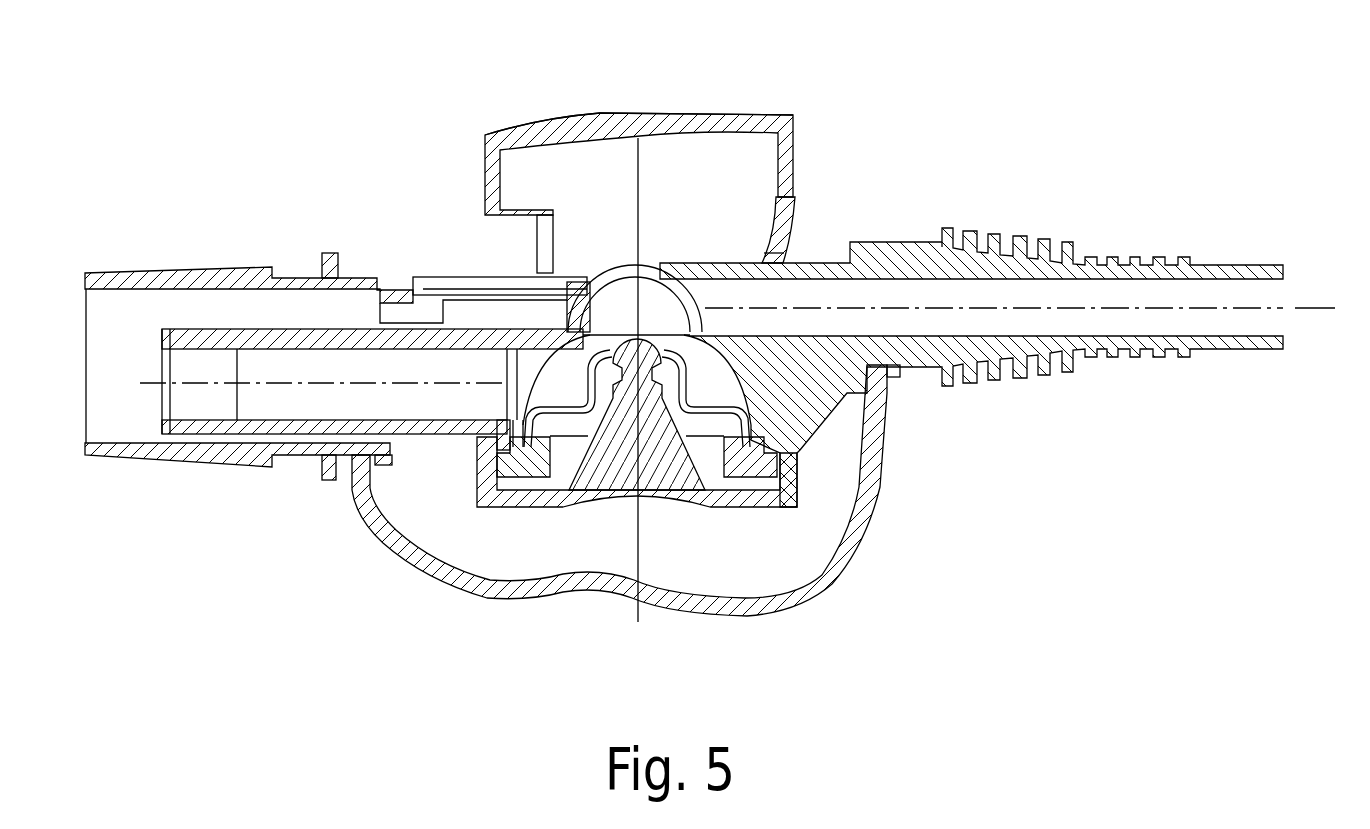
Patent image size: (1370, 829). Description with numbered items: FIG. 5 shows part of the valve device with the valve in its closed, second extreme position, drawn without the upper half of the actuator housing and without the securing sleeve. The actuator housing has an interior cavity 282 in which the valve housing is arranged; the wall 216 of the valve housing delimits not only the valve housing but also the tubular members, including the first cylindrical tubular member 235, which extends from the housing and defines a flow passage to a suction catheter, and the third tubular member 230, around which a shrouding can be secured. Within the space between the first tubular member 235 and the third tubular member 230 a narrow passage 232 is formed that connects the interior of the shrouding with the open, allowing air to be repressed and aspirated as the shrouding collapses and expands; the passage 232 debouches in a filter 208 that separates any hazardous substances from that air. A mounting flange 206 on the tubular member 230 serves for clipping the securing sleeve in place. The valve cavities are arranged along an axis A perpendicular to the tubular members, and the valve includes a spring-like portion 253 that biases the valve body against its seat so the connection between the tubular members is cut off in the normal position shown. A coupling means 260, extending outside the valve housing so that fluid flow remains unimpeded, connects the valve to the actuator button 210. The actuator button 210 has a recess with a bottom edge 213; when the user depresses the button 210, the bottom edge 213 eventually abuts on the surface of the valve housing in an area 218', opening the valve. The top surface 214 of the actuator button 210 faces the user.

The mounting flange 206 is at (324, 482).
The filter 208 is at (478, 287).
The actuator button 210 is at (572, 128).
The bottom edge 213 is at (487, 195).
The cap top surface 214 is at (670, 113).
The wall of the valve housing 216 is at (807, 262).
The area of the valve housing surface 218' is at (804, 158).
The third tubular member 230 is at (165, 452).
The narrow passage 232 is at (420, 318).
The first cylindrical tubular member 235 is at (188, 332).
The spring-like portion 253 is at (707, 440).
The coupling means 260 is at (593, 467).
The interior cavity 282 is at (760, 543).
The axis A is at (637, 622).